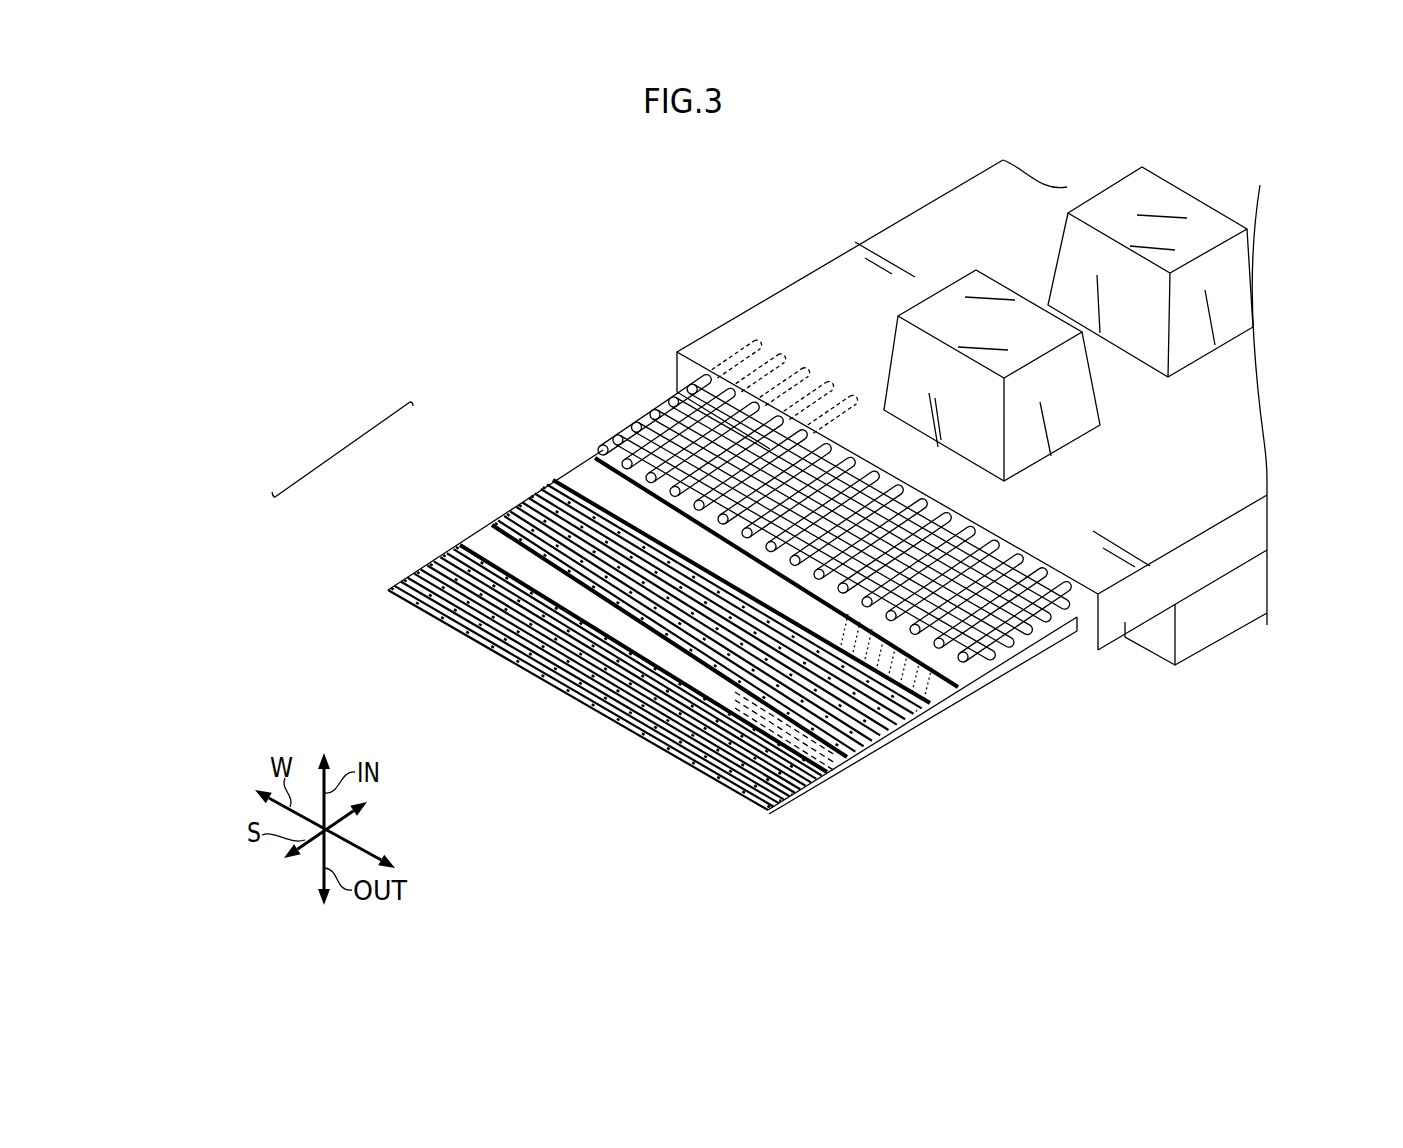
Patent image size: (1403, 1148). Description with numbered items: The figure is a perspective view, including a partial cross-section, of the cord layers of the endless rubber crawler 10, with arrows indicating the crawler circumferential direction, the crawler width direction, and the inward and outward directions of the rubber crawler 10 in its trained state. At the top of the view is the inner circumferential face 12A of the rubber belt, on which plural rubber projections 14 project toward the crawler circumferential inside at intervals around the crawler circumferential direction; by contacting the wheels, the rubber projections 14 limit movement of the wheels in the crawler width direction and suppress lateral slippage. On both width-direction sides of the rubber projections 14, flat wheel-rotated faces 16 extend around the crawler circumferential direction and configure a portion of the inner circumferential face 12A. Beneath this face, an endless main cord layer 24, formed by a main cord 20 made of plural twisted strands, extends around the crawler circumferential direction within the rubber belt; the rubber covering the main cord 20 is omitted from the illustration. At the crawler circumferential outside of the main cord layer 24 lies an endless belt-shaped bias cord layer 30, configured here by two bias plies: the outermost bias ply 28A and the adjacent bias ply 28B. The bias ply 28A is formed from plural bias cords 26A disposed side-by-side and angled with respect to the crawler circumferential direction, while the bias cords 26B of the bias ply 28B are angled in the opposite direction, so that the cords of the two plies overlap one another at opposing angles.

The rubber crawler 10 is at (555, 228).
The inner circumferential face 12A is at (767, 333).
The rubber projections 14 is at (933, 290).
The wheel-rotated faces 16 is at (1003, 270).
The main cord 20 is at (597, 448).
The main cord layer 24 is at (640, 413).
The bias cords 26A is at (730, 787).
The bias cords 26B is at (853, 737).
The bias ply 28A is at (455, 546).
The bias ply 28B is at (553, 480).
The bias cord layer 30 is at (615, 636).